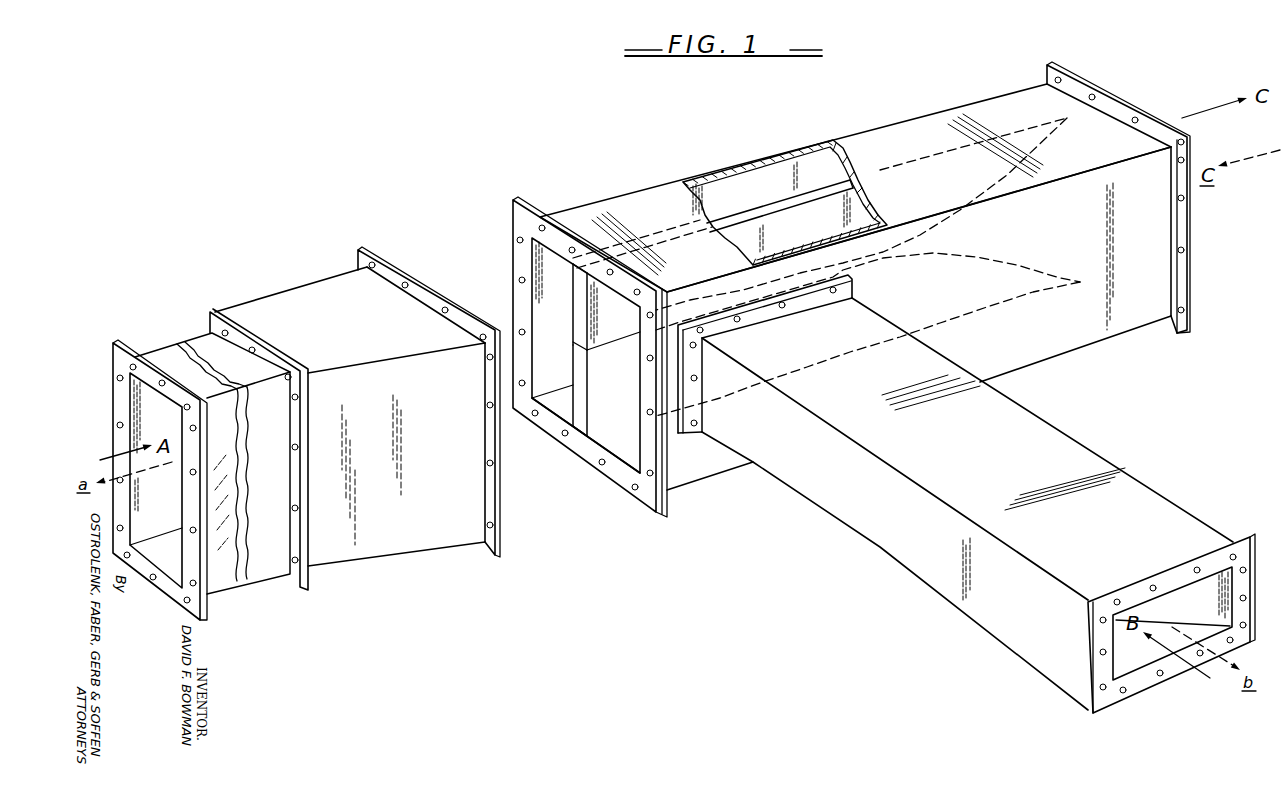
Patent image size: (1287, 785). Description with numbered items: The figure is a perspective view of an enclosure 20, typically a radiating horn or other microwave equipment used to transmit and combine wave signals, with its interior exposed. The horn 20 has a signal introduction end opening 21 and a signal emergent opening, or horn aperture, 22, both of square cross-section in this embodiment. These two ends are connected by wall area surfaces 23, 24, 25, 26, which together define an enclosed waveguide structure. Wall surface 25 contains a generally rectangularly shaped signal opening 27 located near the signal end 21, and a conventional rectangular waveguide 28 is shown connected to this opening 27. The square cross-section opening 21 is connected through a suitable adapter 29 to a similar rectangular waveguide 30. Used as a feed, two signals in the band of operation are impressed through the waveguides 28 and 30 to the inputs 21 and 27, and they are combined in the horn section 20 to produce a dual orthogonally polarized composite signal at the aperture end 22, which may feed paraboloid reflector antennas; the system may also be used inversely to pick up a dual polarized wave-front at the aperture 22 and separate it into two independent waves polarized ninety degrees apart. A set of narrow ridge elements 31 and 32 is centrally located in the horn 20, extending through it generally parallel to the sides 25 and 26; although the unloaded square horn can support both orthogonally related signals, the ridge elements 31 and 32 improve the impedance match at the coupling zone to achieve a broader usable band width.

The enclosure 20 is at (752, 139).
The signal introduction end opening 21 is at (553, 308).
The horn aperture 22 is at (1150, 108).
The wall area surface 23 is at (1104, 157).
The wall area surface 24 is at (636, 453).
The wall surface 25 is at (1148, 304).
The wall area surface 26 is at (566, 282).
The signal opening 27 is at (727, 308).
The rectangular waveguide 28 is at (1040, 448).
The adapter 29 is at (296, 302).
The rectangular waveguide 30 is at (158, 357).
The ridge element 31 is at (580, 367).
The ridge element 32 is at (578, 322).